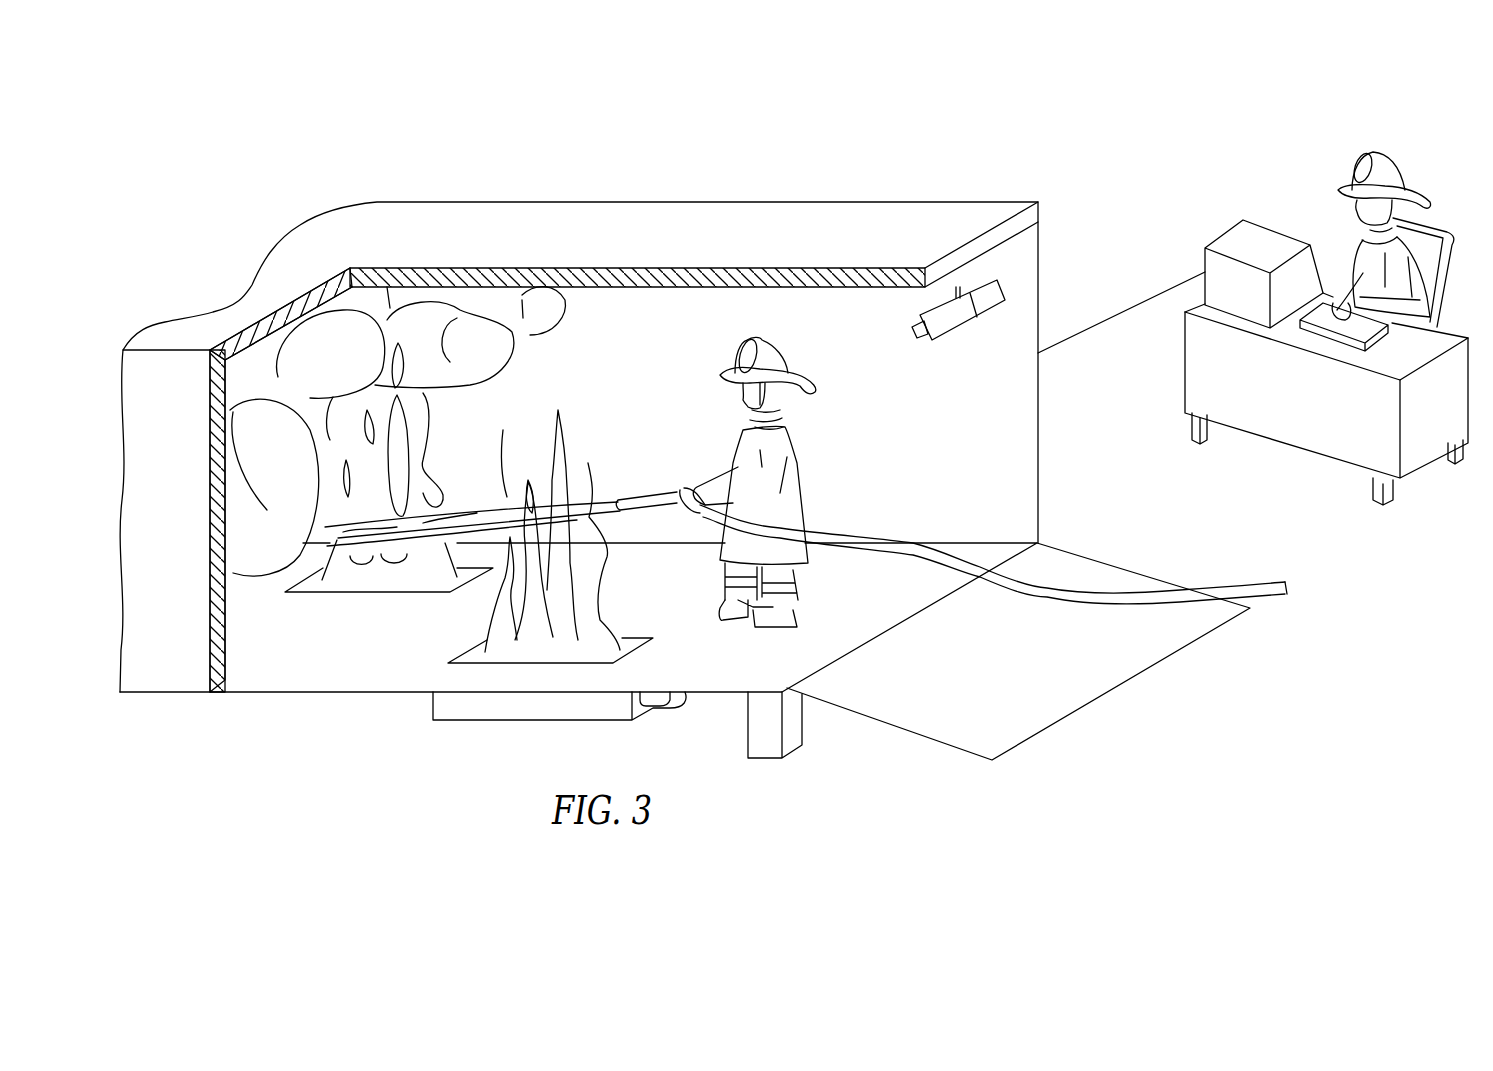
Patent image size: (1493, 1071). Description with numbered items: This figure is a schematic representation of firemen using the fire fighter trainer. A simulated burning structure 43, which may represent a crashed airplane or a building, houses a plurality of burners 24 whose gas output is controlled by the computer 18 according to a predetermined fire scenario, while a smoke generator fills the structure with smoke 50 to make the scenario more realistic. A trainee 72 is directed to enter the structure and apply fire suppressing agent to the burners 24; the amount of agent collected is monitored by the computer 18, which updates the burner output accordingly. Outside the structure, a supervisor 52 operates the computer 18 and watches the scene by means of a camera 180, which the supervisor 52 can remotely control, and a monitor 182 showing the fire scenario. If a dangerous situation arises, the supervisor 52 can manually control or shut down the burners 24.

The computer 18 is at (1341, 346).
The burner 24 is at (487, 625).
The simulated burning structure 43 is at (686, 215).
The smoke 50 is at (258, 434).
The supervisor 52 is at (1413, 189).
The trainee 72 is at (798, 481).
The camera 180 is at (960, 336).
The monitor 182 is at (1219, 231).